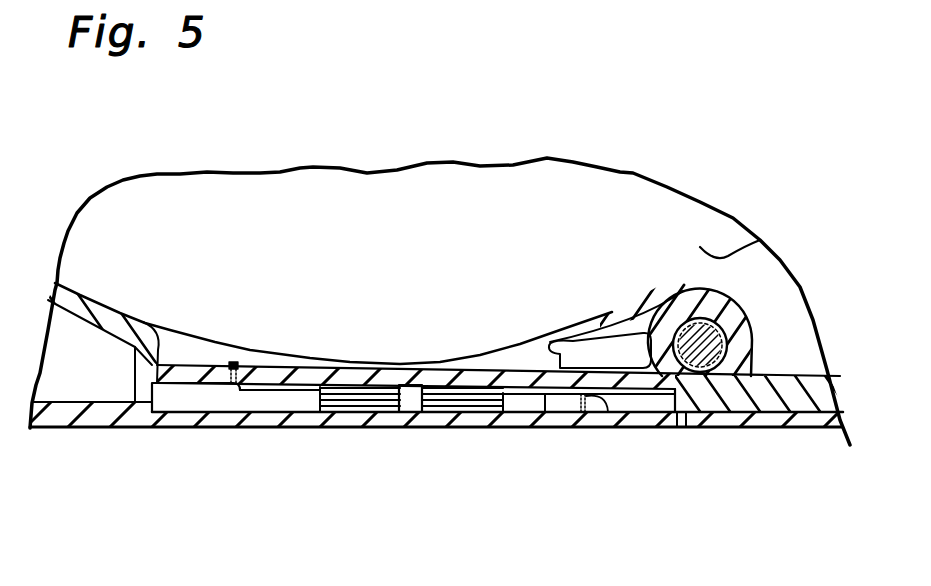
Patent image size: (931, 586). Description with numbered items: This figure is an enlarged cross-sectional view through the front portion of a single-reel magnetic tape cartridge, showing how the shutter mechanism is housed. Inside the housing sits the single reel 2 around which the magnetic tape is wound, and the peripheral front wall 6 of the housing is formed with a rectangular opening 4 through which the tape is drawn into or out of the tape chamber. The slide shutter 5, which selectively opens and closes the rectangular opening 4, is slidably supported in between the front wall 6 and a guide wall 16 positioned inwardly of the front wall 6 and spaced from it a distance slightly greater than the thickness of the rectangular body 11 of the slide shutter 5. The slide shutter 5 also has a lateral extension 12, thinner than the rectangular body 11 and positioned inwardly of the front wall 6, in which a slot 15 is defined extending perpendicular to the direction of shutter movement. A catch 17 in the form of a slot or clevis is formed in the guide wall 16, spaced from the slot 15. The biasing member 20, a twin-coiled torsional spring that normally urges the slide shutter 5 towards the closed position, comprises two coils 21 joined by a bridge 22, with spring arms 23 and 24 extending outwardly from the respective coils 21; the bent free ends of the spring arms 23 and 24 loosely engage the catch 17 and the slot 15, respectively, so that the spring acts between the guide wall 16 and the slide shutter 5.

The single reel 2 is at (612, 312).
The rectangular opening 4 is at (785, 418).
The slide shutter 5 is at (732, 434).
The front wall 6 is at (215, 417).
The rectangular body 11 is at (784, 397).
The lateral extension 12 is at (523, 398).
The slot 15 is at (586, 399).
The guide wall 16 is at (310, 378).
The catch 17 is at (233, 360).
The biasing member 20 is at (360, 420).
The coils 21 is at (446, 395).
The bridge 22 is at (410, 414).
The spring arm 23 is at (282, 392).
The spring arm 24 is at (543, 394).